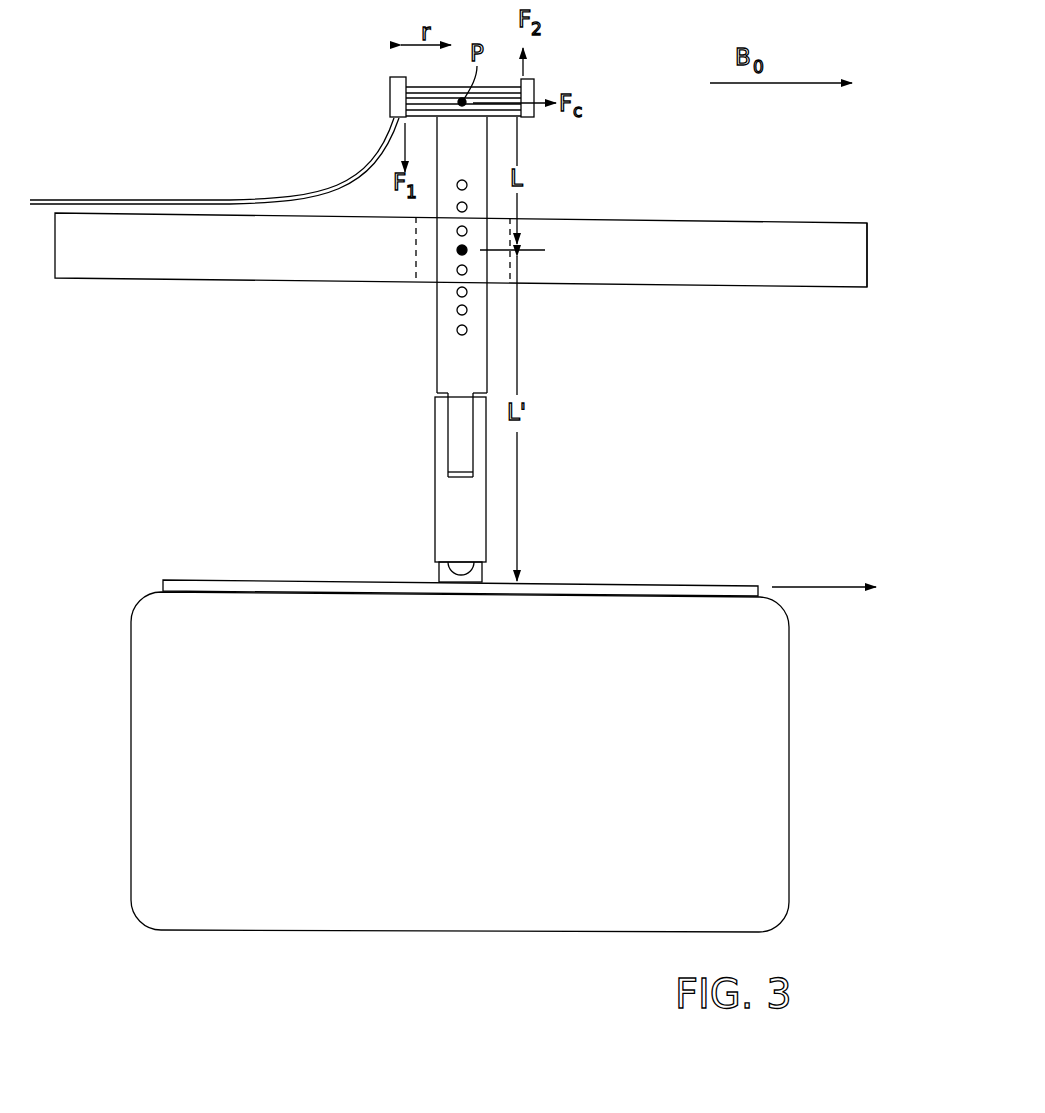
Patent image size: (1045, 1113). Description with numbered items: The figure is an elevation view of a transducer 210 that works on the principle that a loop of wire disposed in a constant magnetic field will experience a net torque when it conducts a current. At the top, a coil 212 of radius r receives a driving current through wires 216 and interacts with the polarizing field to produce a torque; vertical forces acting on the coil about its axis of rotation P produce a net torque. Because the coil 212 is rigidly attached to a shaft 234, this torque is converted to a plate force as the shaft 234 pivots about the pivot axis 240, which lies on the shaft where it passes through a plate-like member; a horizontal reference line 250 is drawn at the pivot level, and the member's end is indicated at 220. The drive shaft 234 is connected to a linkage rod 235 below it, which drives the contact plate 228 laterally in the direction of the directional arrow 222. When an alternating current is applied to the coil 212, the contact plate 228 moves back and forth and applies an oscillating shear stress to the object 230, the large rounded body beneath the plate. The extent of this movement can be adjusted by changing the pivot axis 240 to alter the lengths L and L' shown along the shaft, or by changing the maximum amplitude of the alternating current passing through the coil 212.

The transducer 210 is at (664, 217).
The coil 212 is at (390, 99).
The wires 216 is at (260, 201).
The plate edge 220 is at (868, 240).
The directional arrow 222 is at (795, 587).
The contact plate 228 is at (633, 586).
The object 230 is at (789, 765).
The shaft 234 is at (437, 364).
The linkage rod 235 is at (443, 522).
The pivot axis 240 is at (460, 252).
The reference line 250 is at (532, 252).